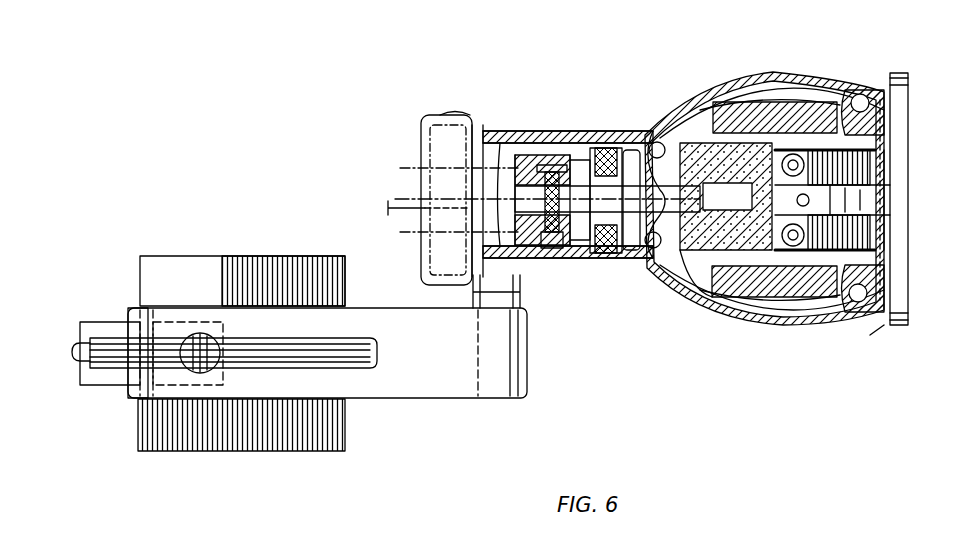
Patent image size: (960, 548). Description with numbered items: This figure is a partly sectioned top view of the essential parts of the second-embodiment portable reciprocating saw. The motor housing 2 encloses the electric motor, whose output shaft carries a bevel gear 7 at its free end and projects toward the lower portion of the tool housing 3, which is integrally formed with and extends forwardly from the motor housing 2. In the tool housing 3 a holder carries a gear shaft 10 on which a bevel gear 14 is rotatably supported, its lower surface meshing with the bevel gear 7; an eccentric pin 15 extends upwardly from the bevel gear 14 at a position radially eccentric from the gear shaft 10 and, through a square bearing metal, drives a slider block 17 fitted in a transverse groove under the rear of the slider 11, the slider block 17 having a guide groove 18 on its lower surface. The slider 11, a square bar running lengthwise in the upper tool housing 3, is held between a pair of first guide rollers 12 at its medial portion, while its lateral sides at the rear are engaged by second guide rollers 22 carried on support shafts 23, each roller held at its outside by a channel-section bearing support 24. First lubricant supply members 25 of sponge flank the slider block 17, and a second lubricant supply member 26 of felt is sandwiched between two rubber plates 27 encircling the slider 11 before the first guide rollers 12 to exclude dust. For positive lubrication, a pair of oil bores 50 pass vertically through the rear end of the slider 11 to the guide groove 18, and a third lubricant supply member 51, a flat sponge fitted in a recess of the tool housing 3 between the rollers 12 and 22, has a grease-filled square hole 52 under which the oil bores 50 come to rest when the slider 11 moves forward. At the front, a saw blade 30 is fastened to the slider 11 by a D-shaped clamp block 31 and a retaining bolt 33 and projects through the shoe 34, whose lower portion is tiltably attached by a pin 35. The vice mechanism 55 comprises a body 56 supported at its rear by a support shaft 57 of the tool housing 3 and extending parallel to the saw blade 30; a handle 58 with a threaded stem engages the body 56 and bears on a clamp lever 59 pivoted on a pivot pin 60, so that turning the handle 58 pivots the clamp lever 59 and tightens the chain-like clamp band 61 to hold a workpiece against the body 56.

The motor housing 2 is at (902, 73).
The tool housing 3 is at (863, 90).
The bevel gear 7 is at (898, 197).
The gear shaft 10 is at (748, 142).
The slider 11 is at (690, 130).
The first guide rollers 12 is at (654, 275).
The bevel gear 14 is at (882, 222).
The eccentric pin 15 is at (845, 190).
The slider block 17 is at (800, 165).
The guide groove 18 is at (872, 318).
The second guide rollers 22 is at (816, 140).
The support shafts 23 is at (788, 140).
The bearing support 24 is at (880, 238).
The first lubricant supply members 25 is at (780, 102).
The second lubricant supply member 26 is at (622, 258).
The rubber plate 27 is at (612, 150).
The saw blade 30 is at (400, 215).
The clamp block 31 is at (530, 248).
The retaining bolt 33 is at (575, 258).
The shoe 34 is at (418, 168).
The pin 35 is at (455, 115).
The oil bores 50 is at (830, 192).
The third lubricant supply member 51 is at (668, 130).
The square hole 52 is at (700, 292).
The vice mechanism 55 is at (374, 410).
The body 56 is at (455, 400).
The support shaft 57 is at (530, 345).
The handle 58 is at (262, 350).
The clamp lever 59 is at (112, 390).
The pivot pin 60 is at (160, 330).
The clamp band 61 is at (76, 350).